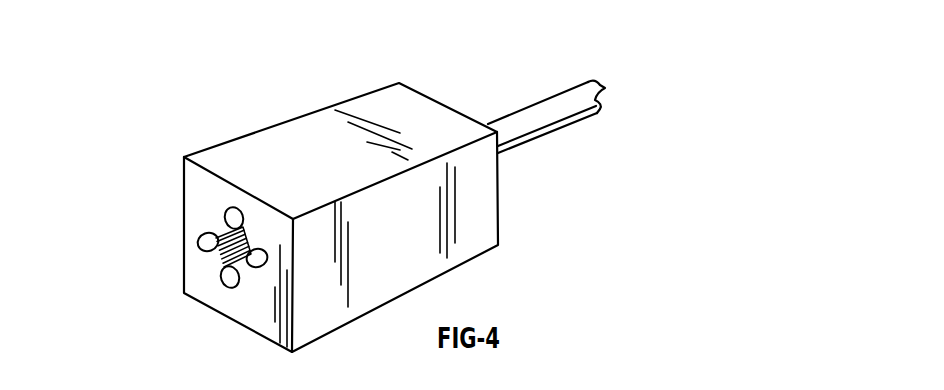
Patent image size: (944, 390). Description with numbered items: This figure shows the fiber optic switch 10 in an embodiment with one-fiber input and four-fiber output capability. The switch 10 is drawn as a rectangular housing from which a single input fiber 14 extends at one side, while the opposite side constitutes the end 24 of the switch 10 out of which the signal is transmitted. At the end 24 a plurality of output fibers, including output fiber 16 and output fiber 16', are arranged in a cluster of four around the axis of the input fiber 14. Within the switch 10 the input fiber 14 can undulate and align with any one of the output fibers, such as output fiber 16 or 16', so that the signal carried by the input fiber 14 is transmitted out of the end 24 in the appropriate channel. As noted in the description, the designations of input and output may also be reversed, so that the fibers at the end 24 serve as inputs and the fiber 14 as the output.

The fiber optic switch 10 is at (300, 115).
The input fiber 14 is at (565, 88).
The output fiber 16 is at (164, 255).
The output fiber 16' is at (180, 182).
The end of switch 24 is at (158, 217).